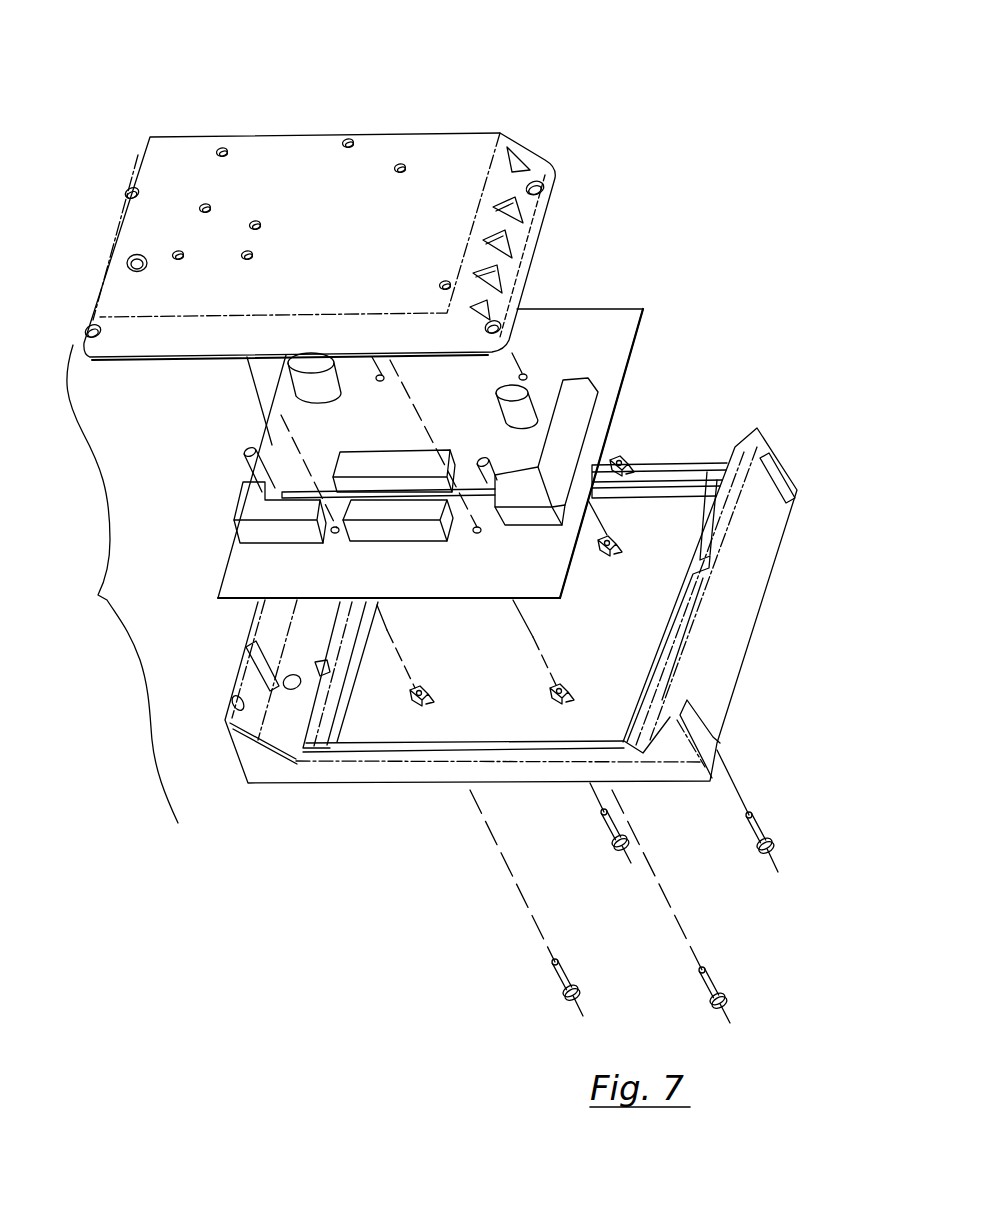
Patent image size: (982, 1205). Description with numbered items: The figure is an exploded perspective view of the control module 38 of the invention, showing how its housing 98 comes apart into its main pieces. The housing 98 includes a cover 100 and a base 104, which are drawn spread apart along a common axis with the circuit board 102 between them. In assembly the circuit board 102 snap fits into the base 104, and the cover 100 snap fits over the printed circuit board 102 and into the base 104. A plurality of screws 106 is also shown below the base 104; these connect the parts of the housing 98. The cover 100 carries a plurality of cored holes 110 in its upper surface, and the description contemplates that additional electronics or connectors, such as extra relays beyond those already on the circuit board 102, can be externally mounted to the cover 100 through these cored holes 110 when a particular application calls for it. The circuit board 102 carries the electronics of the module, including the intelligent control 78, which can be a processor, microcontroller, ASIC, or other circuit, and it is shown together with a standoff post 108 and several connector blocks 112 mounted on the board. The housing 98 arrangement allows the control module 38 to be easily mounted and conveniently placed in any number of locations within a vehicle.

The control module 38 is at (456, 49).
The intelligent control 78 is at (389, 462).
The housing 98 is at (122, 584).
The cover 100 is at (252, 135).
The circuit board 102 is at (232, 585).
The base 104 is at (272, 777).
The screws 106 is at (610, 832).
The standoff post 108 is at (272, 443).
The cored holes 110 is at (220, 146).
The connector blocks 112 is at (247, 500).